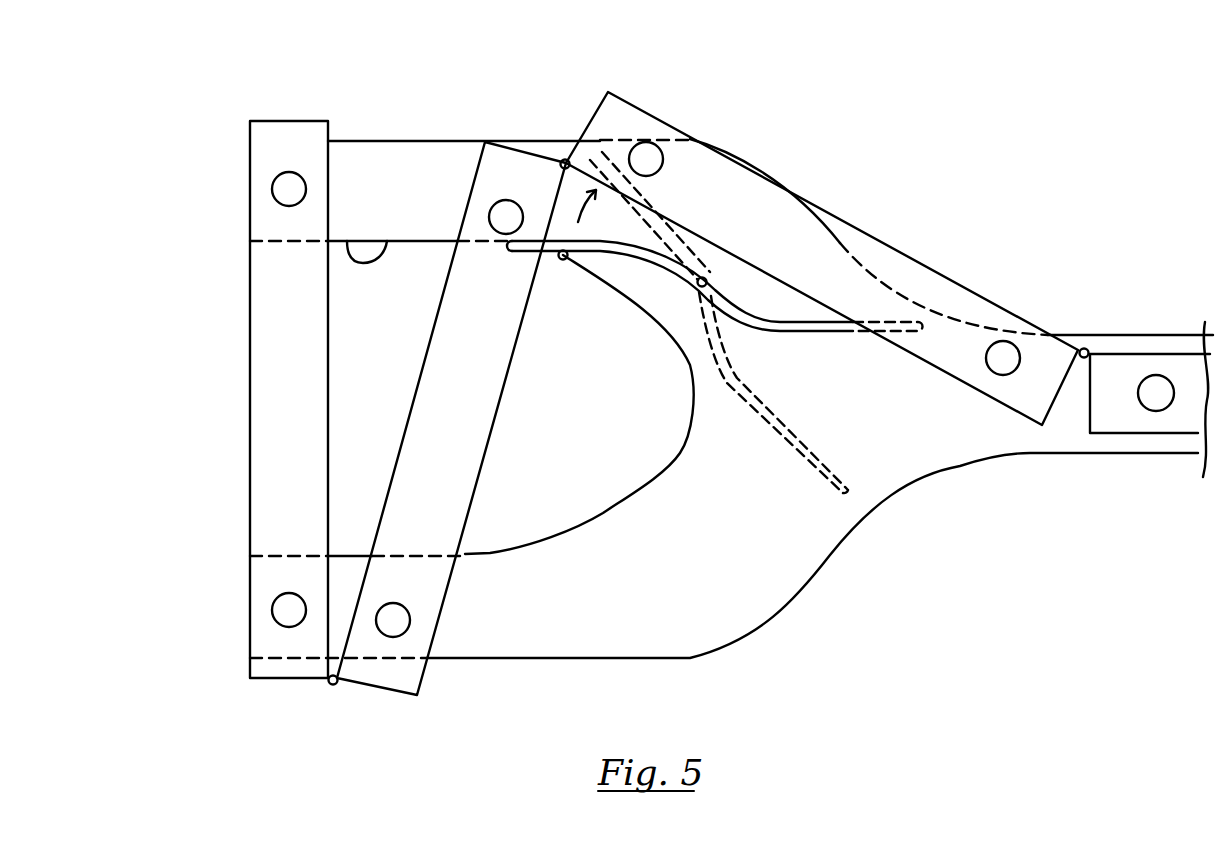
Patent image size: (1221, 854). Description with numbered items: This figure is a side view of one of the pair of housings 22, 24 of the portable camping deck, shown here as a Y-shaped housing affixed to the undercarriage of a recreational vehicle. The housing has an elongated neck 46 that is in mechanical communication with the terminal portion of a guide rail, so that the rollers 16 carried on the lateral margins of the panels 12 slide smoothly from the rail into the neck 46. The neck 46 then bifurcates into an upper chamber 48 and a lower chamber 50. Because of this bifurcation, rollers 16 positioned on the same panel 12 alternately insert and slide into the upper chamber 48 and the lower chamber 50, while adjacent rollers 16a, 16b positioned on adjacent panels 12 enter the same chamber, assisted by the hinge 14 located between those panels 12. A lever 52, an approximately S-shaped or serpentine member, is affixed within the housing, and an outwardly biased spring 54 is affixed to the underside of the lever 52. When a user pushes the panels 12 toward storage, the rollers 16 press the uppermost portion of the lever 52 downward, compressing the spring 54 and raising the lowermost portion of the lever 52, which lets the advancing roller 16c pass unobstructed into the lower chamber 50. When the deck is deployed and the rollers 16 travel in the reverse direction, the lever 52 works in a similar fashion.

The panel 12 is at (278, 403).
The hinge 14 is at (333, 685).
The roller 16 is at (287, 183).
The roller 16a is at (503, 199).
The roller 16b is at (647, 143).
The advancing roller 16c is at (1157, 388).
The housing 22 is at (731, 347).
The housing 24 is at (400, 141).
The neck 46 is at (1042, 453).
The upper chamber 48 is at (347, 241).
The lower chamber 50 is at (477, 553).
The lever 52 is at (675, 448).
The spring 54 is at (600, 240).